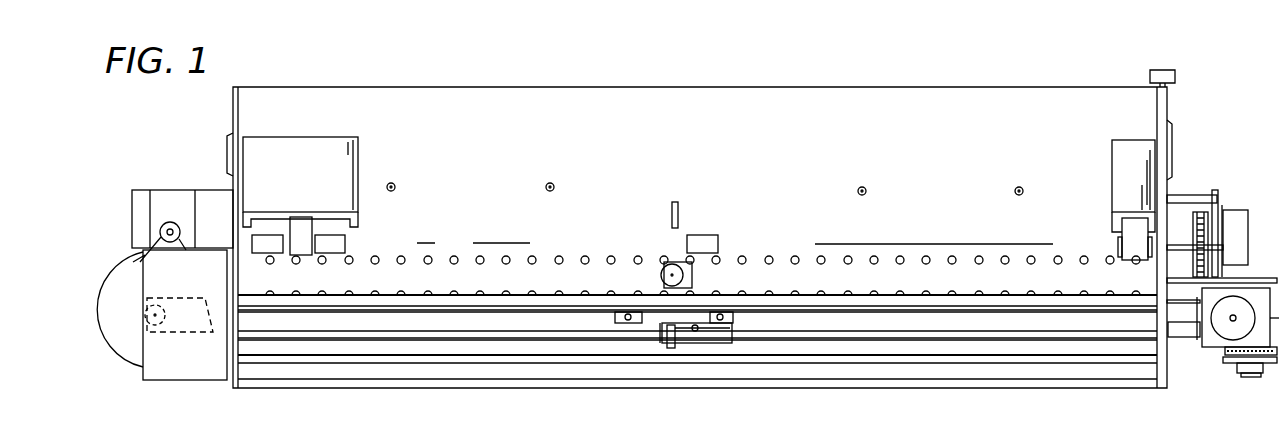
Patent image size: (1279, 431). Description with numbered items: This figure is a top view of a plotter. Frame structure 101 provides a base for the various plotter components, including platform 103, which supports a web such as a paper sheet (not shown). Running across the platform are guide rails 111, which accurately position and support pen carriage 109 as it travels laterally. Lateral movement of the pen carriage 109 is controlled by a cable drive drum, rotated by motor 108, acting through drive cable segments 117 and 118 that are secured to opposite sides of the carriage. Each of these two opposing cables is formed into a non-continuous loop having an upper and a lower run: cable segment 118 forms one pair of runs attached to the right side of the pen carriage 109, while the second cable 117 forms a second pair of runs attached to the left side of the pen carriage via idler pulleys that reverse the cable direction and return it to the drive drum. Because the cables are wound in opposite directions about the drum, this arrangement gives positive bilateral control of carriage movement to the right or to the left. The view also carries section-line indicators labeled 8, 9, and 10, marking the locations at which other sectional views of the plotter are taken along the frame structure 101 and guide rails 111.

The frame structure 101 is at (230, 108).
The platform 103 is at (718, 100).
The motor 108 is at (175, 203).
The pen carriage 109 is at (684, 346).
The guide rails 111 is at (947, 303).
The drive cable segment 117 is at (1182, 340).
The drive cable segment 118 is at (216, 356).
The section line for FIG. 10 is at (603, 283).
The section line for FIG. 9 is at (579, 343).
The section line for FIG. 8 is at (673, 427).